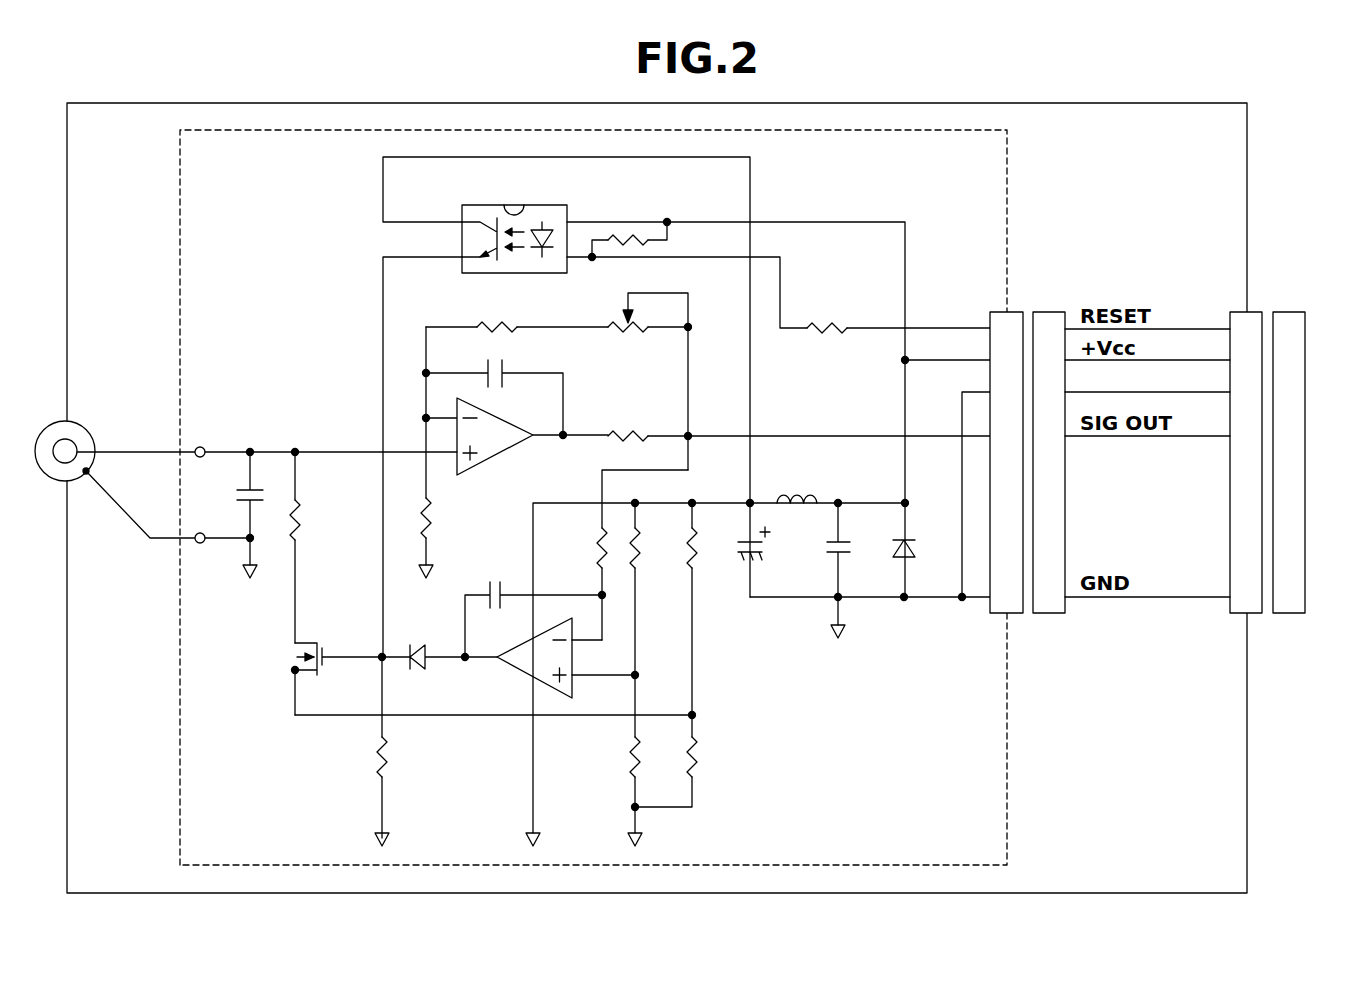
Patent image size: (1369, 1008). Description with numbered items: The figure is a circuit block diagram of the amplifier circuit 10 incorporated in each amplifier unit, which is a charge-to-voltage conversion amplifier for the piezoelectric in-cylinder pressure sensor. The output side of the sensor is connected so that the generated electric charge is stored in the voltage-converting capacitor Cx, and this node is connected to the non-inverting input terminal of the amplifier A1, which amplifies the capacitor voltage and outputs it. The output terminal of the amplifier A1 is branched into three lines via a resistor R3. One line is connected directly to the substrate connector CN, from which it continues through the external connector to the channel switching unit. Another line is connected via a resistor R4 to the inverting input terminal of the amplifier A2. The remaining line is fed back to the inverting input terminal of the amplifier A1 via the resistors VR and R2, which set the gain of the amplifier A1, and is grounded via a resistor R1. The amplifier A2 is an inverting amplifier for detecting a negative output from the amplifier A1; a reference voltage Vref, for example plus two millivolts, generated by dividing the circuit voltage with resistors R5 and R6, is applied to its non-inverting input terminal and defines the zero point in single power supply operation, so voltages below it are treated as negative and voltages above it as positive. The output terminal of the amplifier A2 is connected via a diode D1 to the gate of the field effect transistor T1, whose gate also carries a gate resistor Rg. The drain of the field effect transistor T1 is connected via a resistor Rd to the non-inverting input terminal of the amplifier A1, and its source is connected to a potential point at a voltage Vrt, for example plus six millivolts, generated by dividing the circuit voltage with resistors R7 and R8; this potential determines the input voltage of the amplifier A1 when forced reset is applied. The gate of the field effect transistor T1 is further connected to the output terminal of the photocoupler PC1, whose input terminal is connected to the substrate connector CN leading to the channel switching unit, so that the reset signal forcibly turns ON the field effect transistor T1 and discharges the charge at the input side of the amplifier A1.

The amplifier circuit 10 is at (1020, 190).
The substrate connector CN is at (1027, 447).
The photocoupler PC1 is at (686, 407).
The voltage-converting capacitor Cx is at (235, 515).
The resistor Rd is at (312, 547).
The resistor R1 is at (412, 452).
The resistor R2 is at (517, 315).
The resistor VR is at (650, 381).
The amplifier A1 is at (516, 417).
The resistor R3 is at (799, 425).
The field effect transistor T1 is at (324, 679).
The diode D1 is at (439, 641).
The amplifier A2 is at (550, 640).
The resistor R4 is at (628, 555).
The resistor R5 is at (651, 588).
The resistor R6 is at (651, 760).
The resistor R7 is at (708, 608).
The resistor R8 is at (682, 761).
The gate resistor Rg is at (398, 751).
The reference voltage Vref is at (662, 676).
The voltage Vrt is at (515, 716).